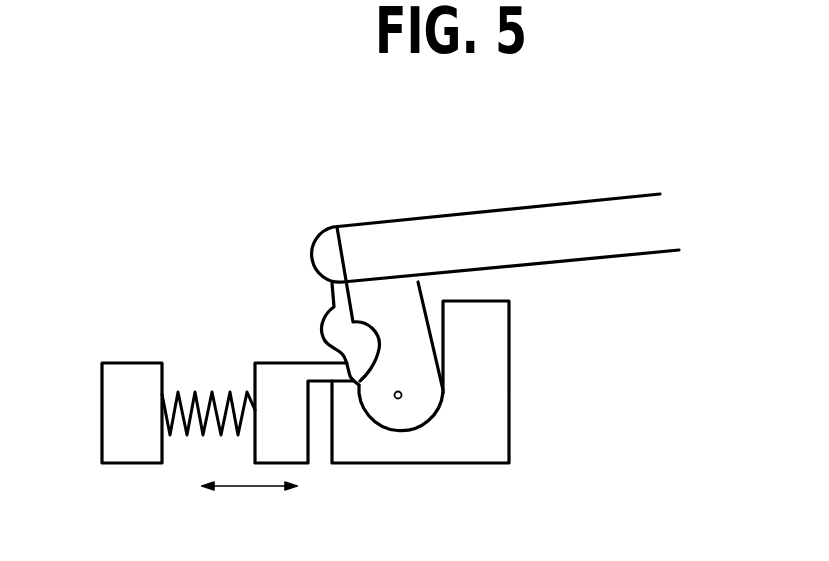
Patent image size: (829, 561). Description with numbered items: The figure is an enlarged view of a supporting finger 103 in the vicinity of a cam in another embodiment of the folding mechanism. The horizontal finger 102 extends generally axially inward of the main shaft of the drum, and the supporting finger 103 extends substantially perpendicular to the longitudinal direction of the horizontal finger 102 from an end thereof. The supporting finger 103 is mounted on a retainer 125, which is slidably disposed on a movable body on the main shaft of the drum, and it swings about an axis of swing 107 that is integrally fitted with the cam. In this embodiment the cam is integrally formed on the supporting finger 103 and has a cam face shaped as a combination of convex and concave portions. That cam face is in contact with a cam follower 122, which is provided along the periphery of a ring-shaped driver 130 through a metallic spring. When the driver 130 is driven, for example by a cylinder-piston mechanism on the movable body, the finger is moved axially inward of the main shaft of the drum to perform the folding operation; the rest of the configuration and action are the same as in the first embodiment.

The horizontal finger 102 is at (517, 208).
The supporting finger 103 is at (418, 357).
The axis of swing 107 is at (399, 399).
The cam follower 122 is at (275, 362).
The retainer 125 is at (512, 443).
The driver 130 is at (127, 363).